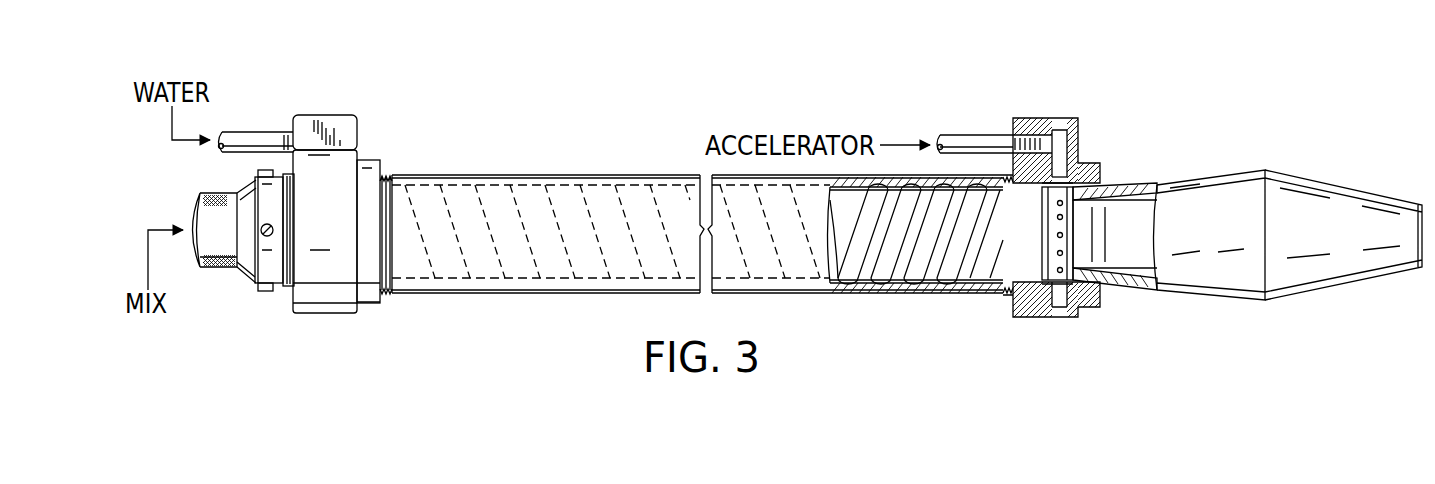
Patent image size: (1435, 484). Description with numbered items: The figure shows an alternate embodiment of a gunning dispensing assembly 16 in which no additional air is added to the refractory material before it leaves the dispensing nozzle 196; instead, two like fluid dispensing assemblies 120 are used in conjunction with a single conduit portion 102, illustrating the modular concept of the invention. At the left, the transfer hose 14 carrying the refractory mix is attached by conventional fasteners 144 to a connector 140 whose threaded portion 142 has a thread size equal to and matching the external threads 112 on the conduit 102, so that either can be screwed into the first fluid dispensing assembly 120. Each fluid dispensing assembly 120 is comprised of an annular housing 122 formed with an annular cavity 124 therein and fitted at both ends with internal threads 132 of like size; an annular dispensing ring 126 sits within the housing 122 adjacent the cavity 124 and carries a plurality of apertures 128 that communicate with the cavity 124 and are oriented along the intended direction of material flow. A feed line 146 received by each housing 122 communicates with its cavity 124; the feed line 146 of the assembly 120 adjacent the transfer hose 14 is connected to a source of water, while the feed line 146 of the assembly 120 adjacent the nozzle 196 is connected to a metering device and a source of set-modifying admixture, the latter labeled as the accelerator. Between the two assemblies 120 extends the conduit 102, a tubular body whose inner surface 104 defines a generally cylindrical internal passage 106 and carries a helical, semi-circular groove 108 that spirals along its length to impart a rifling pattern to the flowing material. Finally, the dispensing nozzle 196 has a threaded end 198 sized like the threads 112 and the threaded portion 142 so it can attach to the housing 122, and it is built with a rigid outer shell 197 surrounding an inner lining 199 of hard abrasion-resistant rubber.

The transfer hose 14 is at (207, 267).
The dispensing assembly 16 is at (697, 208).
The conduit portion 102 is at (529, 169).
The inner surface 104 is at (853, 280).
The internal passage 106 is at (898, 248).
The helical semi-circular groove 108 is at (922, 280).
The external threads 112 is at (383, 292).
The fluid dispensing assembly 120 is at (708, 171).
The annular housing 122 is at (353, 135).
The annular cavity 124 is at (1070, 127).
The annular dispensing ring 126 is at (1048, 223).
The apertures 128 is at (1065, 235).
The internal threads 132 is at (1023, 303).
The connector 140 is at (242, 273).
The threaded portion 142 is at (290, 288).
The fasteners 144 is at (262, 297).
The feed line 146 is at (258, 138).
The dispensing nozzle 196 is at (1309, 173).
The rigid outer shell 197 is at (1225, 180).
The threaded end 198 is at (1100, 307).
The inner lining 199 is at (1130, 187).